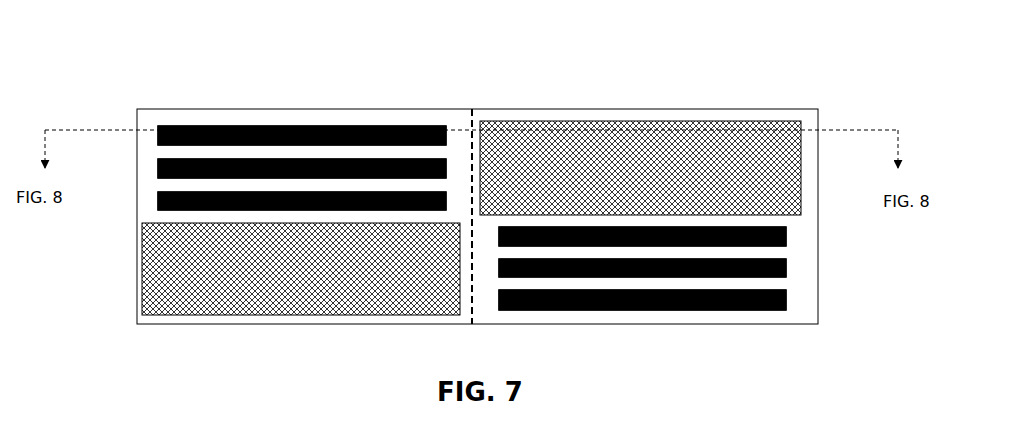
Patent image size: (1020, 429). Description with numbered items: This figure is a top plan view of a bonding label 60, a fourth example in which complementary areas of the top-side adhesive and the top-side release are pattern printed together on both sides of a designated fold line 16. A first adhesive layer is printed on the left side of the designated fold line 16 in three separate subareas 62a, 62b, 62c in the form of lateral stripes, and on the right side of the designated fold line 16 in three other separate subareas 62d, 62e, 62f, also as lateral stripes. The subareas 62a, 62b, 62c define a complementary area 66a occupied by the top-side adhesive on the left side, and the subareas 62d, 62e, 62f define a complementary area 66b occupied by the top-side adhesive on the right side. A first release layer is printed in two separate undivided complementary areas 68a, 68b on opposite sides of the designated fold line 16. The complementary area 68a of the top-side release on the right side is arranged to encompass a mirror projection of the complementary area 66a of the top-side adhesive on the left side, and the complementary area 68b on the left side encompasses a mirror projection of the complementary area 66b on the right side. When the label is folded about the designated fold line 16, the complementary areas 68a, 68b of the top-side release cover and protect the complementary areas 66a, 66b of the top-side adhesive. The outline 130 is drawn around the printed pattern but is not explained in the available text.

The designated fold line 16 is at (471, 111).
The bonding label 60 is at (510, 74).
The subarea of first adhesive layer 62a is at (158, 132).
The subarea of first adhesive layer 62b is at (158, 165).
The subarea of first adhesive layer 62c is at (158, 198).
The subarea of first adhesive layer 62d is at (788, 237).
The subarea of first adhesive layer 62e is at (788, 268).
The subarea of first adhesive layer 62f is at (788, 299).
The complementary area of top-side adhesive 66a is at (295, 117).
The complementary area of top-side adhesive 66b is at (687, 319).
The complementary area of top-side release 68a is at (651, 112).
The complementary area of top-side release 68b is at (331, 324).
The substrate 130 is at (703, 110).